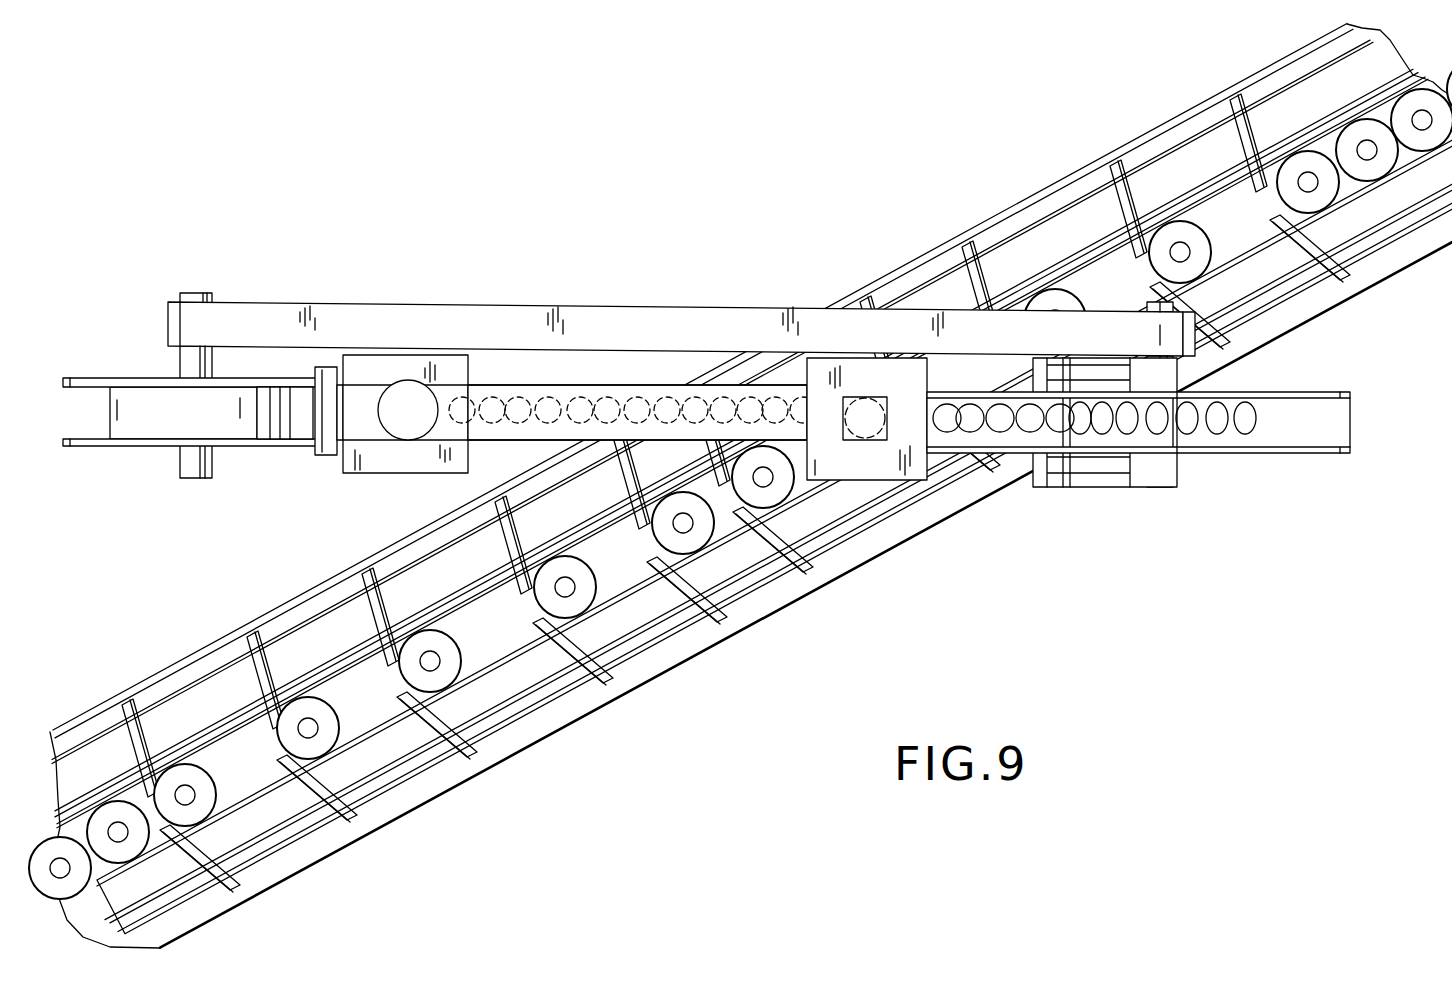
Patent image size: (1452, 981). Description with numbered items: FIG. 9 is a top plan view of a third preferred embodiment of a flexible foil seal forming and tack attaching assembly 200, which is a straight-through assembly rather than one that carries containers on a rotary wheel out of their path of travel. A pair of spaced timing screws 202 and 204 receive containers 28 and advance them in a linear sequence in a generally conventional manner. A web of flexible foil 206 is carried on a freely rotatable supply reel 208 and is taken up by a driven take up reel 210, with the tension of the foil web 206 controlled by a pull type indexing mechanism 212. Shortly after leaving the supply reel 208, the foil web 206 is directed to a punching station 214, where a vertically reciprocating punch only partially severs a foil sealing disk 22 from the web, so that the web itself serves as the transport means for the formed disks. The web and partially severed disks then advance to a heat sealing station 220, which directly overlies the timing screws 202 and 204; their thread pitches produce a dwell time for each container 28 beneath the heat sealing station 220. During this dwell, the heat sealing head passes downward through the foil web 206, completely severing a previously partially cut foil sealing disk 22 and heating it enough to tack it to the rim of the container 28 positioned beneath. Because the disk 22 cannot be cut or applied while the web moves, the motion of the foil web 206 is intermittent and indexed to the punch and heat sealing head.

The flexible foil seal forming and tack attaching assembly 200 is at (740, 486).
The timing screw 202 is at (387, 770).
The timing screw 204 is at (187, 698).
The container 28 is at (277, 749).
The foil sealing disk 22 is at (496, 398).
The web of flexible foil 206 is at (632, 422).
The supply reel 208 is at (120, 446).
The take up reel 210 is at (1313, 394).
The pull type indexing mechanism 212 is at (1085, 482).
The punching station 214 is at (378, 475).
The heat sealing station 220 is at (903, 481).